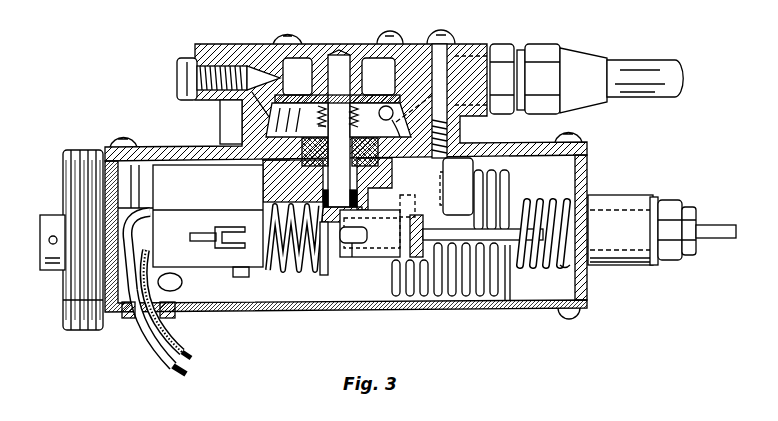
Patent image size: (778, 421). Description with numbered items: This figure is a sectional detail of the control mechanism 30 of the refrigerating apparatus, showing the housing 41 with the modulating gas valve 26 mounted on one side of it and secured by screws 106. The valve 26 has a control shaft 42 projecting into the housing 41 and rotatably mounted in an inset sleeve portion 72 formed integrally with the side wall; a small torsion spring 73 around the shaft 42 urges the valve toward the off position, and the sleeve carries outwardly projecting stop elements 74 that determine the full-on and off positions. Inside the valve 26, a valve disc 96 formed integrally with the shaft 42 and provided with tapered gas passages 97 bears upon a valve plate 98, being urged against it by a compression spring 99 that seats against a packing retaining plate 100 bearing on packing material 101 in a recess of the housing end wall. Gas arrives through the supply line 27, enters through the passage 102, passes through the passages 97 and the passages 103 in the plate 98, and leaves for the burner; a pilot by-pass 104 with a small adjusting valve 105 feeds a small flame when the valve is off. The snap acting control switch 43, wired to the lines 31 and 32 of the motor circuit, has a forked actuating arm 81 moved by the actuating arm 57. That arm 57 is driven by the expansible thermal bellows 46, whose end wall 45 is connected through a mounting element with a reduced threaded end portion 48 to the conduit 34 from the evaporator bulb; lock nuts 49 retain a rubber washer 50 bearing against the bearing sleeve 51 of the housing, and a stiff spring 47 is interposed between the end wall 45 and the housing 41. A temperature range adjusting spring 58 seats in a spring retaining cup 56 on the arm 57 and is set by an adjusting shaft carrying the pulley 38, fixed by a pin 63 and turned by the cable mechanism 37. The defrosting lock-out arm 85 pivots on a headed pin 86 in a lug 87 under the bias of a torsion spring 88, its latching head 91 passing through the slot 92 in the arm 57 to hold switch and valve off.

The modulating valve 26 is at (352, 44).
The supply line 27 is at (637, 84).
The control mechanism 30 is at (250, 313).
The supply line 31 is at (162, 360).
The line 32 is at (176, 352).
The conduit 34 is at (722, 238).
The cable mechanism 37 is at (88, 152).
The pulley 38 is at (65, 296).
The housing 41 is at (582, 170).
The control shaft 42 is at (317, 128).
The control switch 43 is at (190, 221).
The end wall 45 is at (510, 300).
The thermal bellows 46 is at (420, 300).
The stiff spring 47 is at (568, 265).
The reduced threaded end portion 48 is at (695, 250).
The lock nuts 49 is at (672, 260).
The rubber washer 50 is at (652, 265).
The bearing sleeve 51 is at (612, 205).
The spring retaining cup 56 is at (322, 278).
The actuating arm 57 is at (357, 257).
The temperature range adjusting spring 58 is at (280, 280).
The pin 63 is at (50, 225).
The inset sleeve portion 72 is at (375, 188).
The torsion spring 73 is at (362, 205).
The stop elements 74 is at (275, 195).
The forked actuating arm 81 is at (205, 233).
The lock-out arm 85 is at (518, 272).
The headed pin 86 is at (420, 248).
The lug 87 is at (470, 175).
The torsion spring 88 is at (412, 222).
The latching head 91 is at (360, 262).
The slot 92 is at (358, 272).
The valve disc 96 is at (318, 108).
The tapered gas passages 97 is at (382, 118).
The valve plate 98 is at (303, 95).
The compression spring 99 is at (318, 126).
The packing retaining plate 100 is at (305, 142).
The packing material 101 is at (300, 170).
The passage 102 is at (393, 118).
The passages 103 is at (378, 95).
The pilot by-pass 104 is at (278, 78).
The adjusting valve 105 is at (232, 72).
The screws 106 is at (441, 44).